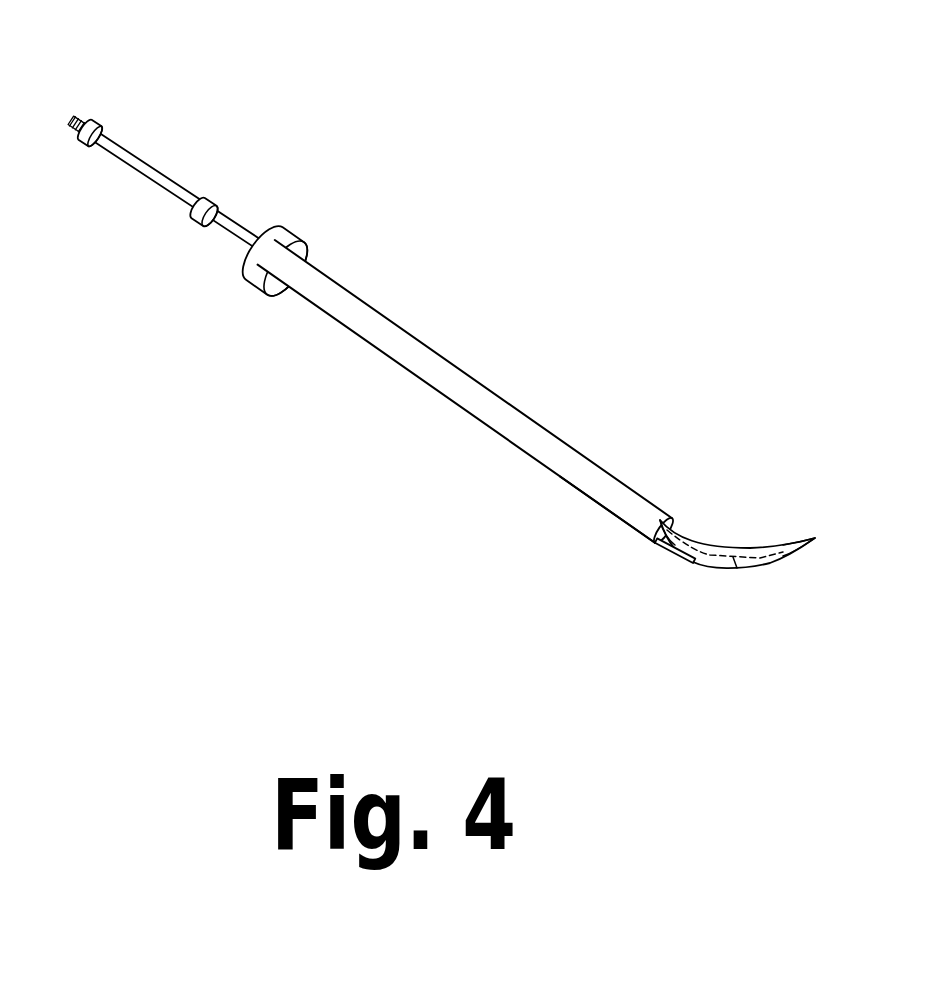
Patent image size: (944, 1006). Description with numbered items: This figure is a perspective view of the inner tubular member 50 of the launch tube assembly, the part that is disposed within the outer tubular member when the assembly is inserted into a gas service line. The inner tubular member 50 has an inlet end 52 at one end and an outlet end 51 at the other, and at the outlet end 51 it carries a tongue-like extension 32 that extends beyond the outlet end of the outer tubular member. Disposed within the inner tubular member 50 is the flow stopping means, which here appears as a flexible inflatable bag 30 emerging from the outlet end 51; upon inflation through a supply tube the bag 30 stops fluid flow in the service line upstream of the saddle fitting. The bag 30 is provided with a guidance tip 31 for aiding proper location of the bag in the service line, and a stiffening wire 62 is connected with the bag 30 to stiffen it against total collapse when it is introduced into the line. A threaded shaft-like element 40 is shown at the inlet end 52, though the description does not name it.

The threaded rod 40 is at (171, 181).
The inlet end 52 is at (325, 274).
The inner tubular member 50 is at (457, 363).
The outlet end 51 is at (603, 503).
The flexible inflatable bag 30 is at (720, 547).
The wire 62 is at (730, 572).
The guidance tip 31 is at (793, 557).
The tongue-like extension 32 is at (660, 549).